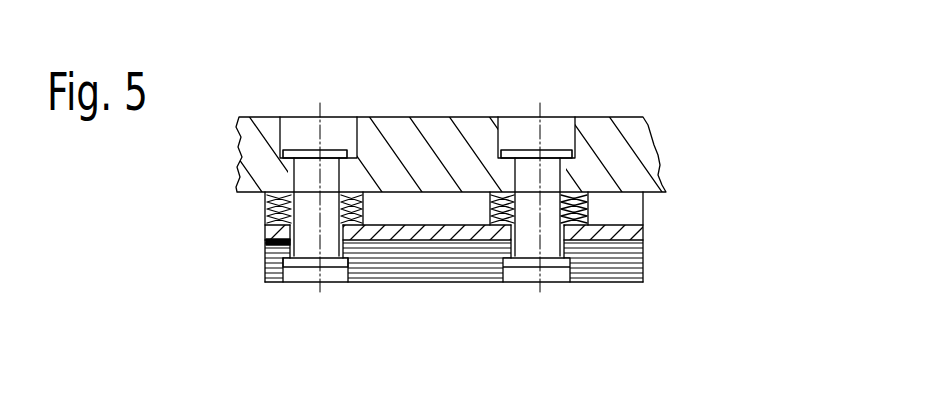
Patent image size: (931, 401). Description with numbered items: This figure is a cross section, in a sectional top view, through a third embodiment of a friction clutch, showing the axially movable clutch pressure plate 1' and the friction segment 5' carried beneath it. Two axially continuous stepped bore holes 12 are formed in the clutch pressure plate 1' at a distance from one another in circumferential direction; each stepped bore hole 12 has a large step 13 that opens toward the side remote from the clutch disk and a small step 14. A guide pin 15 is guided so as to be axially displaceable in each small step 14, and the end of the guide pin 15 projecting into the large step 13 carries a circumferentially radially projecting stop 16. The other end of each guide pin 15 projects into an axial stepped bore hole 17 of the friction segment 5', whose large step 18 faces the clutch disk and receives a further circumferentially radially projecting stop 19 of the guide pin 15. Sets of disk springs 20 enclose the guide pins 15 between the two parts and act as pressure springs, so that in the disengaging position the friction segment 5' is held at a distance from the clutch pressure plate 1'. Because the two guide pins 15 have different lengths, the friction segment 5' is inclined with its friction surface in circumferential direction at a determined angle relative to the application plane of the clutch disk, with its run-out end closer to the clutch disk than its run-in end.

The clutch pressure plate 1' is at (436, 106).
The friction segment 5' is at (450, 282).
The stepped bore hole 12 is at (562, 172).
The large step 13 is at (553, 132).
The small step 14 is at (297, 175).
The guide pin 15 is at (308, 215).
The stop 16 is at (300, 150).
The stepped bore hole 17 is at (270, 246).
The large step 18 is at (297, 277).
The stop 19 is at (310, 262).
The disk springs 20 is at (570, 210).